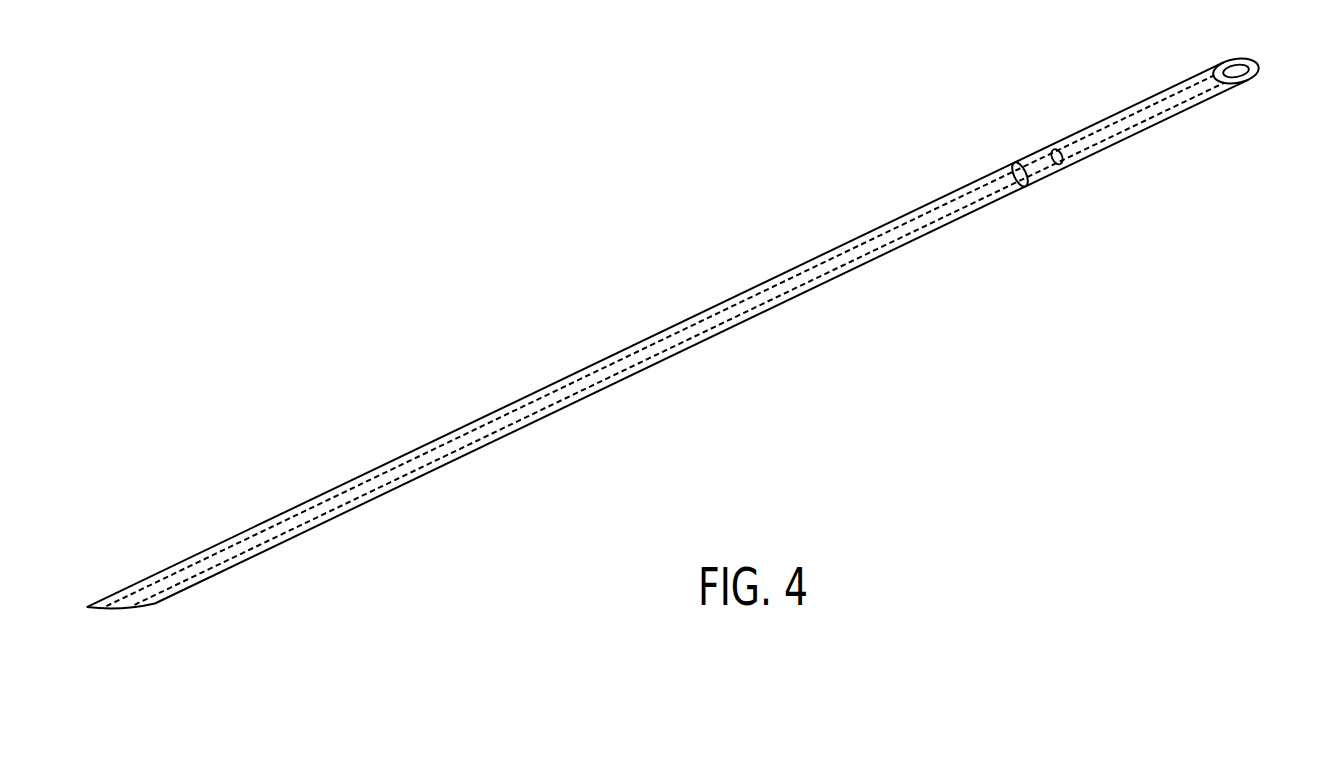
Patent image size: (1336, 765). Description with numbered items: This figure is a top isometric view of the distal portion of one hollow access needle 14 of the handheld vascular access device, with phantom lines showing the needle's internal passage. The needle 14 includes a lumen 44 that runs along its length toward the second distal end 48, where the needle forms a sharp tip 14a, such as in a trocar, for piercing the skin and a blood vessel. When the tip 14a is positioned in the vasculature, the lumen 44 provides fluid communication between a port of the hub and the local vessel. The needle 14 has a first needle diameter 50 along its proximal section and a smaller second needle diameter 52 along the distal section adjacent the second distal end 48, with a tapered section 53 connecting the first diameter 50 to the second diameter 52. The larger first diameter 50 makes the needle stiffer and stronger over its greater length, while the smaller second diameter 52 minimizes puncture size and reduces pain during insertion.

The hollow access needle 14 is at (617, 362).
The tip 14a is at (1259, 66).
The lumen 44 is at (672, 348).
The second distal end 48 is at (1202, 73).
The first needle diameter 50 is at (470, 498).
The second needle diameter 52 is at (1183, 158).
The tapered section 53 is at (1043, 149).